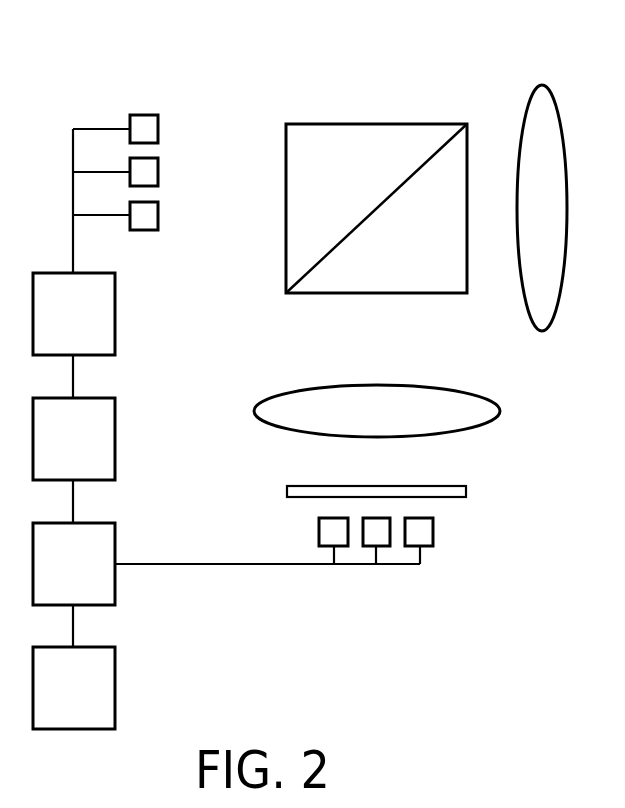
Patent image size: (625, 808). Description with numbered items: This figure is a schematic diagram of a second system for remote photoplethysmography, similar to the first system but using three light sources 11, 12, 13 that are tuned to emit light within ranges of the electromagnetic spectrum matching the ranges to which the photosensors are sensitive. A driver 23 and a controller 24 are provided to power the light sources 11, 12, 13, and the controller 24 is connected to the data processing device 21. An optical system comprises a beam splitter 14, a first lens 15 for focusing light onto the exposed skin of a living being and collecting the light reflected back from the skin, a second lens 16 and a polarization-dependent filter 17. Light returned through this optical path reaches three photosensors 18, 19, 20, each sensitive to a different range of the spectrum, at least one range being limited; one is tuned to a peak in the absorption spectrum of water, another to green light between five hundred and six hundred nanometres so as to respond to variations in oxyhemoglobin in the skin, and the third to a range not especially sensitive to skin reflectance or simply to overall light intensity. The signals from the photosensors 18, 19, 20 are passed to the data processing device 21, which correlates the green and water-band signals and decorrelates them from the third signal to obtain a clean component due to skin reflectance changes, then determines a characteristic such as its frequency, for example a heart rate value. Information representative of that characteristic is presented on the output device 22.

The light source 11 is at (156, 131).
The light source 12 is at (156, 174).
The light source 13 is at (156, 217).
The beam splitter 14 is at (397, 137).
The first lens 15 is at (540, 96).
The second lens 16 is at (492, 410).
The polarization-dependent filter 17 is at (456, 488).
The photosensor 18 is at (322, 531).
The photosensor 19 is at (371, 541).
The photosensor 20 is at (430, 531).
The data processing device 21 is at (87, 576).
The output device 22 is at (87, 701).
The driver 23 is at (87, 452).
The controller 24 is at (87, 327).